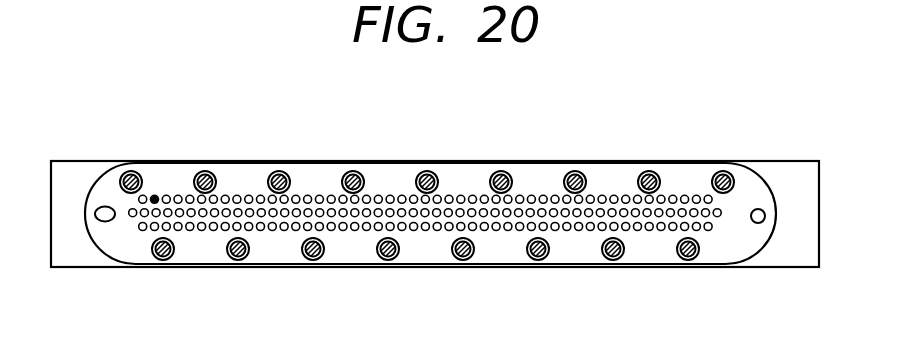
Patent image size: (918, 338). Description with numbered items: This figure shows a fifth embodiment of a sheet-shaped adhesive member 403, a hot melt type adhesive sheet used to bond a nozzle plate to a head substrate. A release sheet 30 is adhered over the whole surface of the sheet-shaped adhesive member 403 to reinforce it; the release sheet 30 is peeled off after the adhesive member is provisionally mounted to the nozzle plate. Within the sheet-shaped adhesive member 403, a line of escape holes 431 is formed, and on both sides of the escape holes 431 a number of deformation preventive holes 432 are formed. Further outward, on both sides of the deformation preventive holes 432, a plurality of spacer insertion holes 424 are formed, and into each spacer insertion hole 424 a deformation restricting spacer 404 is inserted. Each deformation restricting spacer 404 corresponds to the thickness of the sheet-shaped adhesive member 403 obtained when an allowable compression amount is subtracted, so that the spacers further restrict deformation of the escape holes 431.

The release sheet 30 is at (82, 168).
The sheet-shaped adhesive member 403 is at (617, 180).
The deformation restricting spacer 404 is at (201, 170).
The spacer insertion hole 424 is at (277, 168).
The escape hole 431 is at (365, 209).
The deformation preventive hole 432 is at (512, 224).